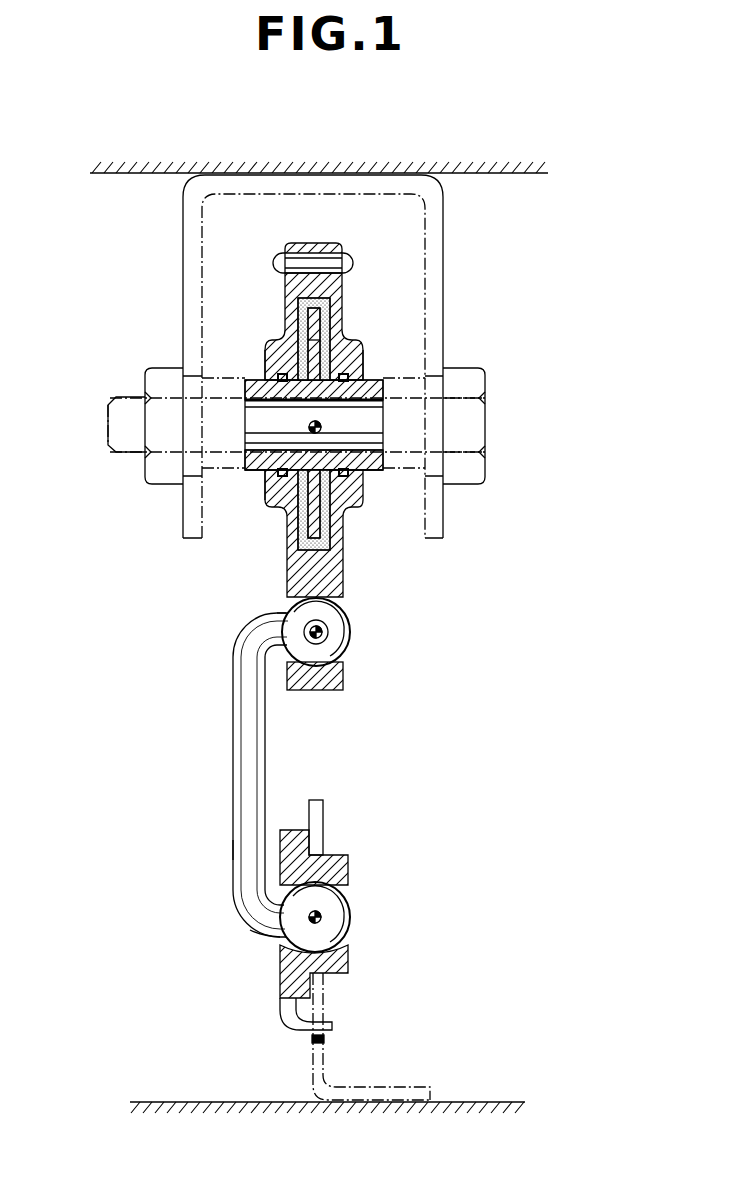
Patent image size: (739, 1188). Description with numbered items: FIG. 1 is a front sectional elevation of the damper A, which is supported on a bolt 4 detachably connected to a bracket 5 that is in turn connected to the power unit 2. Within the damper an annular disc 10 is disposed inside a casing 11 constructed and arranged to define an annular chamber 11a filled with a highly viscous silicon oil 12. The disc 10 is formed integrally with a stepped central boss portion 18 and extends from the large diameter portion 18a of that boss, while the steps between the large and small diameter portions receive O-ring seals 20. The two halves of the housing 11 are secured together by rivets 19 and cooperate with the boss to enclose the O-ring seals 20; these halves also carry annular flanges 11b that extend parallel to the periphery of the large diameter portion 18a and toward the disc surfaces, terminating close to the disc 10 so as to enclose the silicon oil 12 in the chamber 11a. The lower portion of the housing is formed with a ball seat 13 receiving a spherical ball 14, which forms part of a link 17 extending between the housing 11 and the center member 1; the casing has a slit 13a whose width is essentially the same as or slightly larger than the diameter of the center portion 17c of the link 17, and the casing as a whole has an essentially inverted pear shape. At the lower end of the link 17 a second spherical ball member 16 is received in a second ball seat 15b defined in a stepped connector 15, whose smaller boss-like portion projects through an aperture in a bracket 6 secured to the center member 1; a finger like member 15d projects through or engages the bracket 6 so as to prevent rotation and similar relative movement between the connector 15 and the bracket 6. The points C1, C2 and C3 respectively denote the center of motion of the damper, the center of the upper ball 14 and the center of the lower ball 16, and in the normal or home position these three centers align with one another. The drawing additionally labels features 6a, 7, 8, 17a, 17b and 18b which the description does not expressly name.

The center member 1 is at (497, 1100).
The power unit 2 is at (537, 174).
The bolt 4 is at (485, 440).
The bracket 5 is at (445, 290).
The bracket 6 is at (323, 820).
The lower pin rod 6a is at (325, 1038).
The bracket side plates 7 is at (247, 380).
The nut 8 is at (145, 372).
The annular disc 10 is at (312, 326).
The casing 11 is at (288, 595).
The annular chamber 11a is at (332, 537).
The annular flanges 11b is at (283, 350).
The silicon oil 12 is at (343, 335).
The ball seat 13 is at (348, 612).
The slit 13a is at (334, 690).
The spherical ball 14 is at (345, 653).
The connector 15 is at (350, 868).
The second ball seat 15b is at (347, 947).
The finger like member 15d is at (300, 1033).
The second spherical ball member 16 is at (352, 905).
The link 17 is at (234, 767).
The link upper arm 17a is at (250, 637).
The link lower bend 17b is at (258, 940).
The center portion 17c is at (245, 850).
The stepped central boss portion 18 is at (258, 473).
The large diameter portion 18a is at (282, 515).
The housing lower face 18b is at (262, 470).
The rivets 19 is at (352, 260).
The O-ring seals 20 is at (282, 376).
The damper A is at (208, 688).
The center of motion of the damper C1 is at (322, 427).
The center of the upper ball C2 is at (335, 630).
The center of the lower ball C3 is at (323, 920).